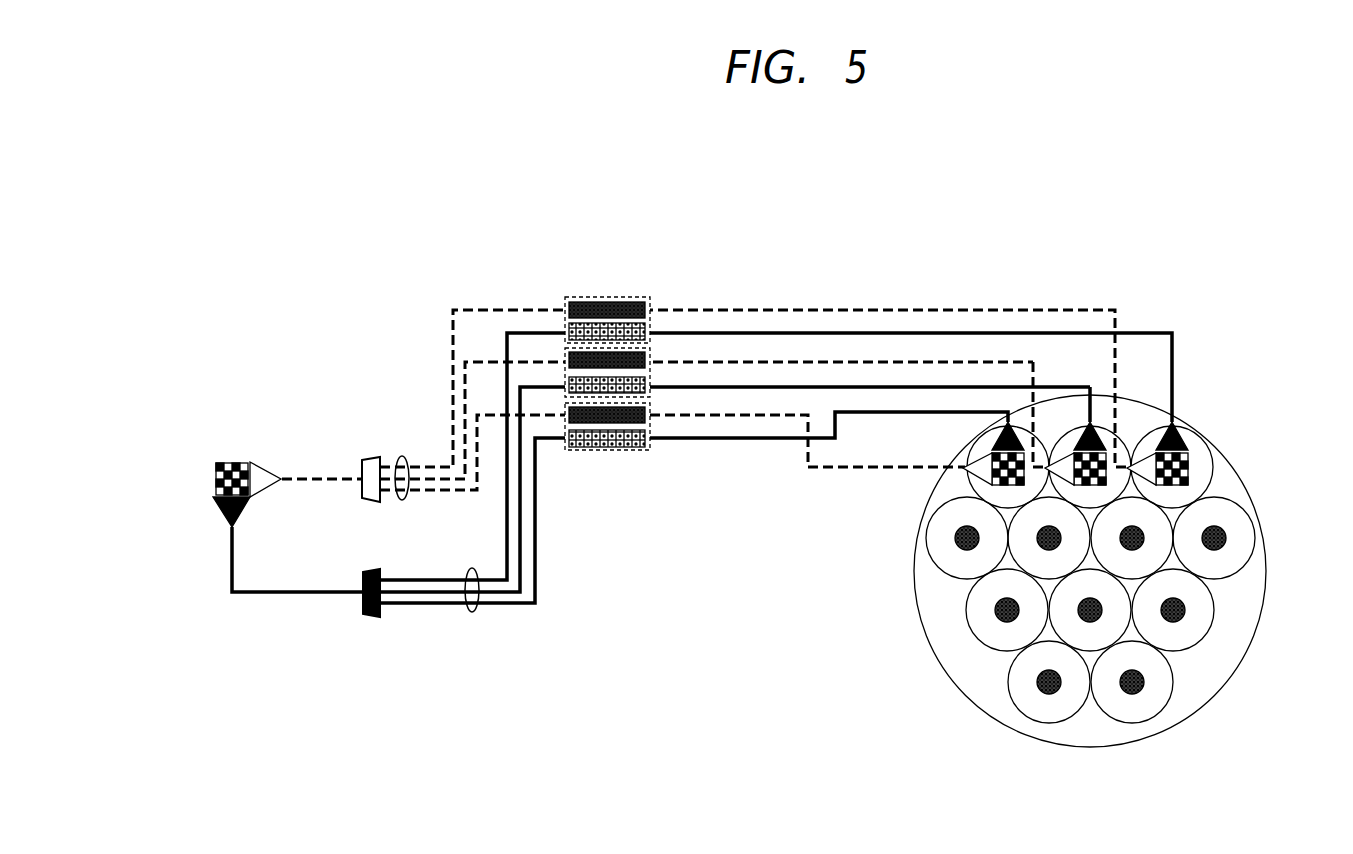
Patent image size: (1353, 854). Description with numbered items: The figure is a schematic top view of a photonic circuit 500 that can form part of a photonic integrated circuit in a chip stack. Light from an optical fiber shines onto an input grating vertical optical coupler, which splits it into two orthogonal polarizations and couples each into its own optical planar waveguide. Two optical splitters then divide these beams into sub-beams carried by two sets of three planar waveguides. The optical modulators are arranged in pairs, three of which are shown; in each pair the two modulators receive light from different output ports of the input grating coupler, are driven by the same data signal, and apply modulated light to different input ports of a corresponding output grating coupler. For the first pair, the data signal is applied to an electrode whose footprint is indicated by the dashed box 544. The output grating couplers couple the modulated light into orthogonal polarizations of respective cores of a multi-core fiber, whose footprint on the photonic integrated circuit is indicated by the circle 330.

The photonic circuit 500 is at (817, 142).
The circle 330 is at (1247, 482).
The dashed box 544 is at (565, 307).